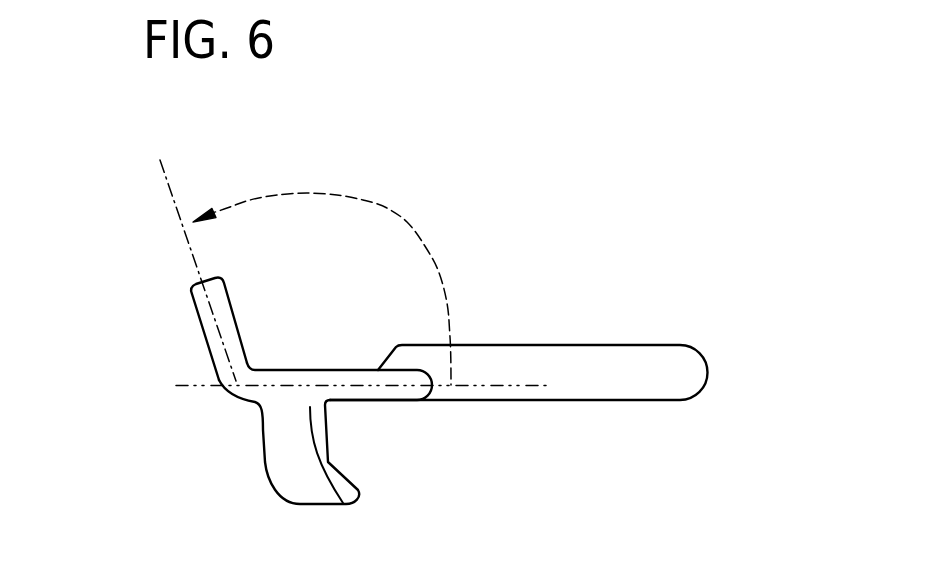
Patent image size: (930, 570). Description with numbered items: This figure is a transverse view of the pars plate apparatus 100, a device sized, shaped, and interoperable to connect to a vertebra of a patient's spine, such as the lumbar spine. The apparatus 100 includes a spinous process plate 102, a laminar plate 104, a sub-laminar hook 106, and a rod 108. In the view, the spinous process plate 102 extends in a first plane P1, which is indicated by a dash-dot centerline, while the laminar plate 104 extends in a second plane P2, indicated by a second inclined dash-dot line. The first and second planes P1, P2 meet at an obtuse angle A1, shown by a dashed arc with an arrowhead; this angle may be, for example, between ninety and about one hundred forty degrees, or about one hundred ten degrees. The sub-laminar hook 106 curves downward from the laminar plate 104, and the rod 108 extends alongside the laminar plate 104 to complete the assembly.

The pars plate apparatus 100 is at (225, 114).
The spinous process plate 102 is at (192, 306).
The laminar plate 104 is at (273, 370).
The sub-laminar hook 106 is at (360, 490).
The rod 108 is at (657, 343).
The first plane P1 is at (480, 387).
The second plane P2 is at (162, 202).
The obtuse angle A1 is at (322, 280).